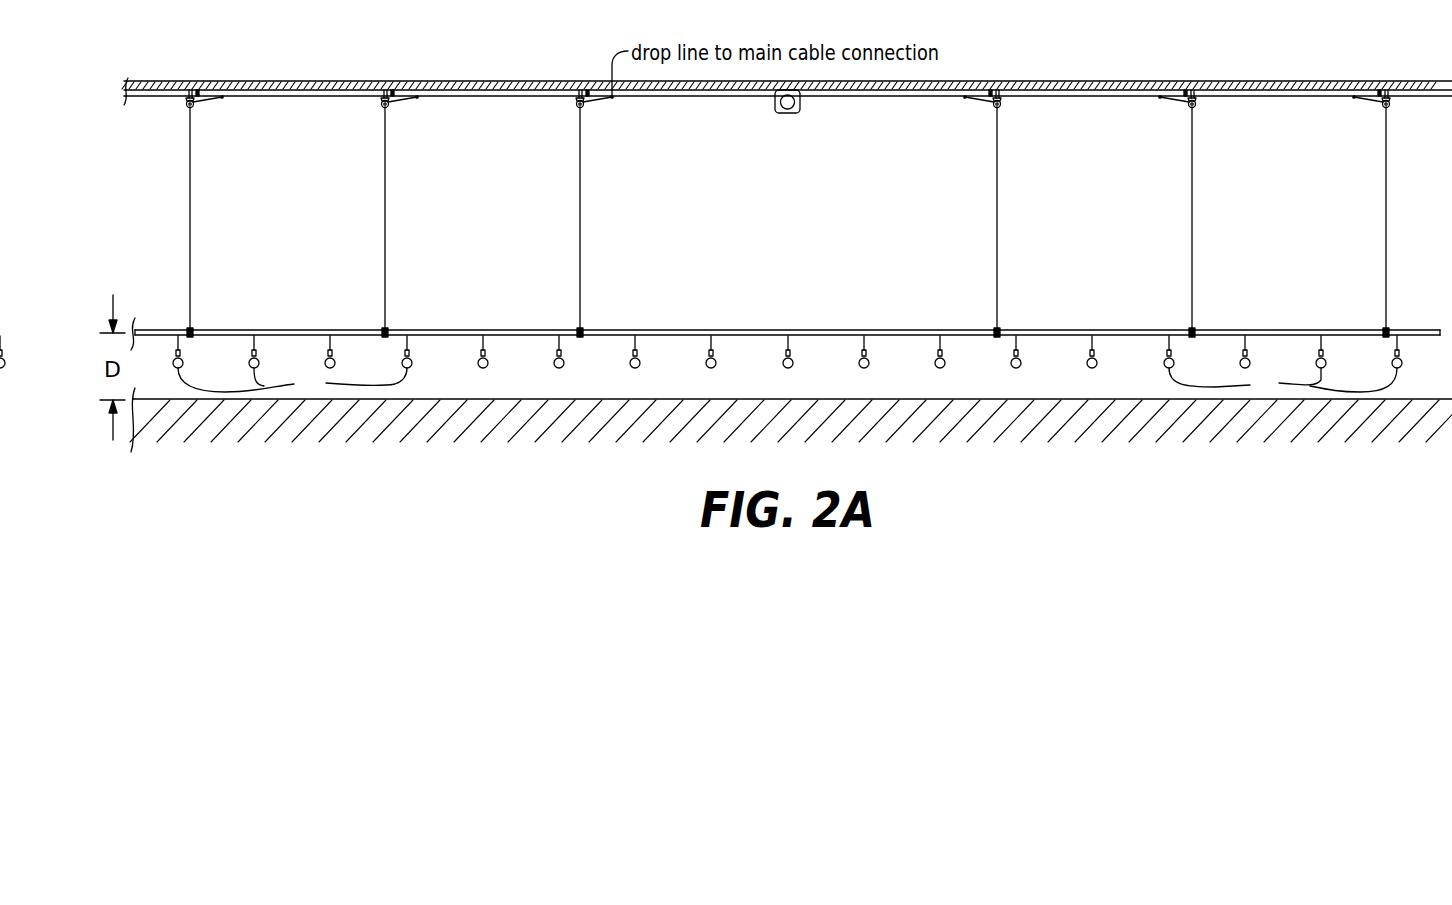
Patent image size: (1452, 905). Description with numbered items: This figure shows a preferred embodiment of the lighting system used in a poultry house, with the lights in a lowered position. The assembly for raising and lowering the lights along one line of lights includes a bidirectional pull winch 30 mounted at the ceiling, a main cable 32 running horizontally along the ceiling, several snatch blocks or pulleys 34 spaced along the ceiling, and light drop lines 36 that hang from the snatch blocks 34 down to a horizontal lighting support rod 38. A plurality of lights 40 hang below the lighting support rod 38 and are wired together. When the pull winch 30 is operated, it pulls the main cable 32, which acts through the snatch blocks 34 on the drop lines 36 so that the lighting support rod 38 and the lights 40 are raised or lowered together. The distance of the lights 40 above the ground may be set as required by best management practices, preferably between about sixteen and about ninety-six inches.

The bidirectional pull winch 30 is at (800, 106).
The main cable 32 is at (440, 96).
The snatch block 34 is at (189, 101).
The light drop line 36 is at (190, 195).
The lighting support rod 38 is at (610, 330).
The lights 40 is at (701, 365).